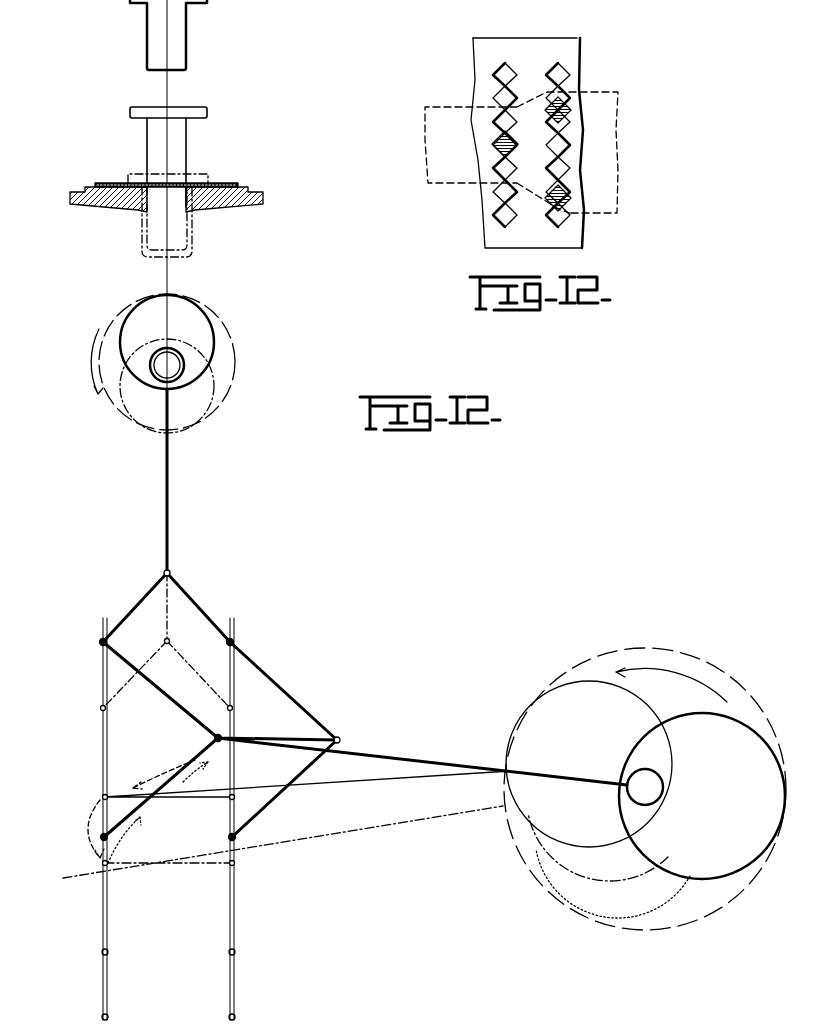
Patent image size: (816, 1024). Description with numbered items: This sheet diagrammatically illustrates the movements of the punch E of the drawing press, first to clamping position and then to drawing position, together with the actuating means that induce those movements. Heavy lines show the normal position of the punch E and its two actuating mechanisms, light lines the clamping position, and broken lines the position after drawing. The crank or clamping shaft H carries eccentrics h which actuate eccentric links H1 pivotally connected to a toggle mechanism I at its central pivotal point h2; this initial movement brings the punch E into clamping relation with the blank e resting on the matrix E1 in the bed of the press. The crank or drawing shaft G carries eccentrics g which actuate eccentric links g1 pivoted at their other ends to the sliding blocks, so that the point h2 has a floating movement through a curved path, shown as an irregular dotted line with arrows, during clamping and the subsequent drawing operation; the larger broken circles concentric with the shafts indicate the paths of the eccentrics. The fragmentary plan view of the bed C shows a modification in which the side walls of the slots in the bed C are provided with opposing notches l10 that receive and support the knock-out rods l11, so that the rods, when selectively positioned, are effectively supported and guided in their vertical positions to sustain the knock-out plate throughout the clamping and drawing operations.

In FIG. 11, the punch E is at (168, 35).
In FIG. 11, the matrix E1 is at (125, 200).
In FIG. 11, the blank e is at (213, 181).
In FIG. 11, the eccentrics g is at (163, 363).
In FIG. 11, the drawing shaft G is at (167, 365).
In FIG. 11, the eccentric links g1 is at (170, 491).
In FIG. 11, the toggle mechanism I is at (200, 717).
In FIG. 11, the central pivotal point h2 is at (213, 739).
In FIG. 11, the eccentric links H1 is at (363, 753).
In FIG. 11, the clamping shaft H is at (645, 787).
In FIG. 11, the eccentrics h is at (645, 789).
In FIG. 12, the bed C is at (563, 48).
In FIG. 12, the notches l10 is at (503, 213).
In FIG. 12, the knock-out rods l11 is at (567, 198).